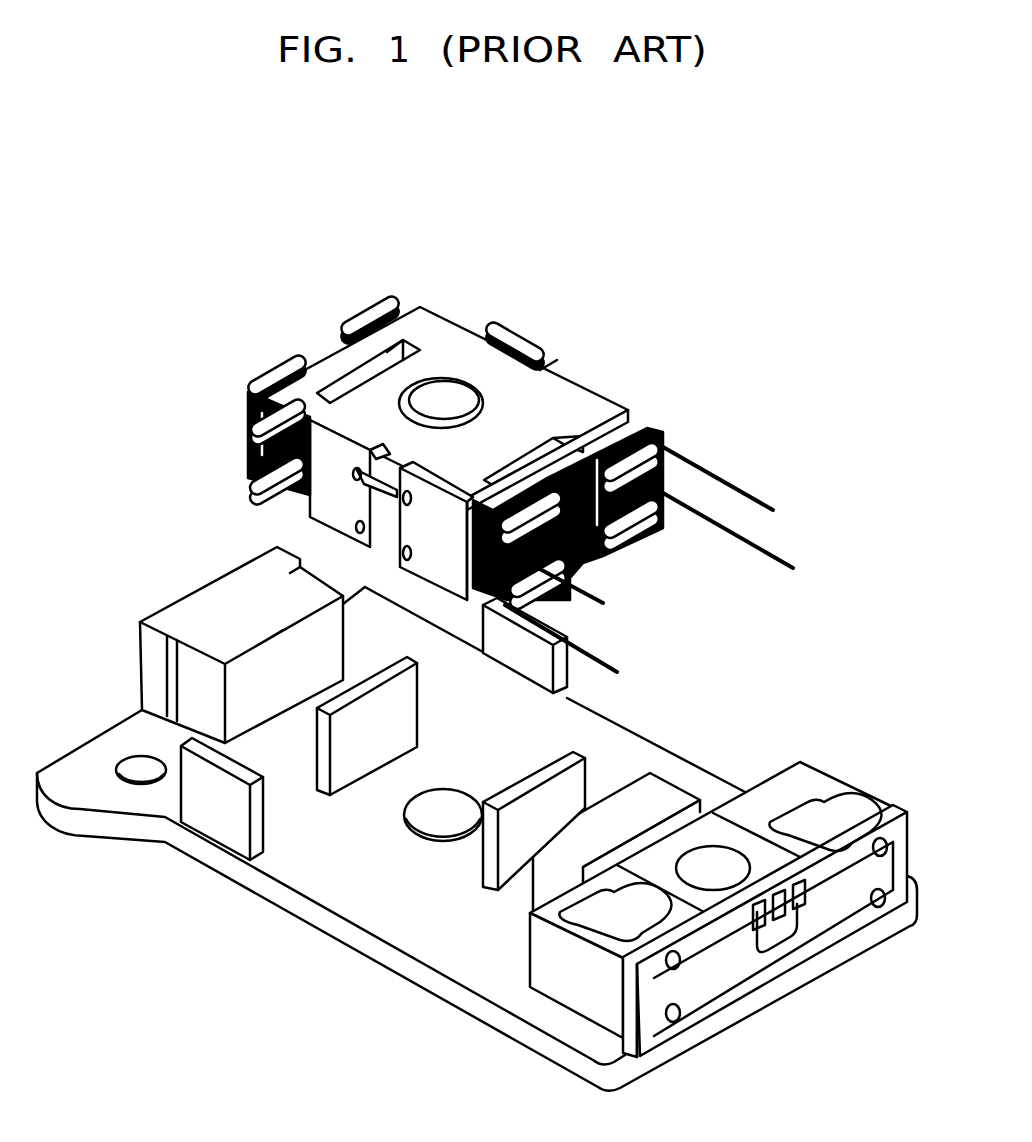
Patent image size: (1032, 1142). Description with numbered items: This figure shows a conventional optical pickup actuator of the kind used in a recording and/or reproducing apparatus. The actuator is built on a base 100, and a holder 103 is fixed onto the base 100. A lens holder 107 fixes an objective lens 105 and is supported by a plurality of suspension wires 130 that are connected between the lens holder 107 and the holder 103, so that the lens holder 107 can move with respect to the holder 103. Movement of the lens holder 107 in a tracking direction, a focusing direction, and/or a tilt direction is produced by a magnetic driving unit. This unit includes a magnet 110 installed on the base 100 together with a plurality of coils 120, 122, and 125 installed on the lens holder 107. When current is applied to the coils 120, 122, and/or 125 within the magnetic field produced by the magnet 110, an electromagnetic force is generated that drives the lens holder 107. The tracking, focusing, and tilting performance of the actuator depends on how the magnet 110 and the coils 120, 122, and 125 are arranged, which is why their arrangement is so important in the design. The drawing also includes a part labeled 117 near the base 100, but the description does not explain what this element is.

The base 100 is at (123, 802).
The holder 103 is at (573, 992).
The objective lens 105 is at (462, 388).
The lens holder 107 is at (338, 355).
The magnet 110 is at (227, 620).
The terminal plate 117 is at (320, 778).
The coil 120 is at (277, 467).
The coil 122 is at (622, 447).
The coil 125 is at (251, 437).
The suspension wires 130 is at (727, 533).